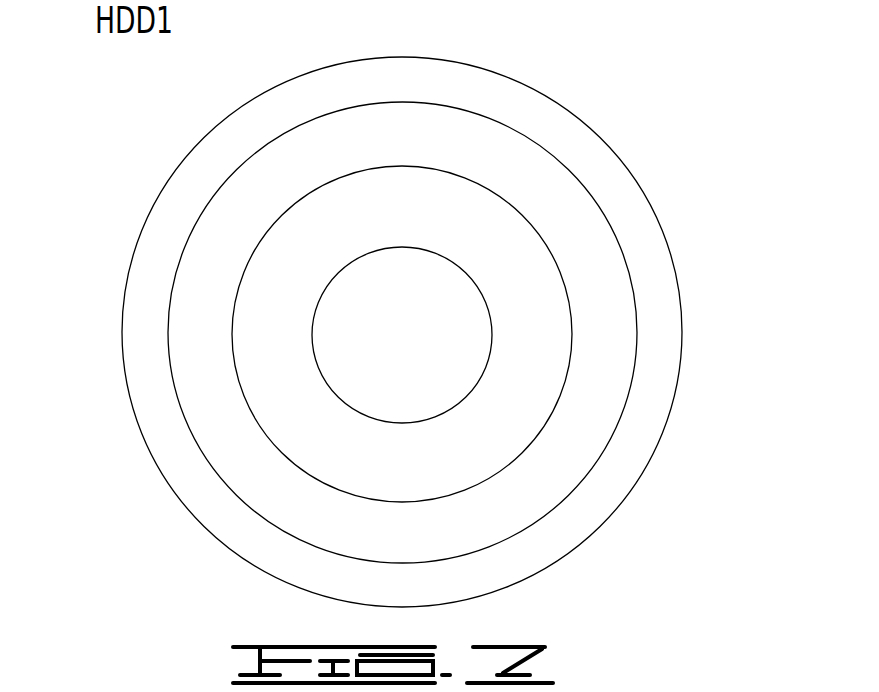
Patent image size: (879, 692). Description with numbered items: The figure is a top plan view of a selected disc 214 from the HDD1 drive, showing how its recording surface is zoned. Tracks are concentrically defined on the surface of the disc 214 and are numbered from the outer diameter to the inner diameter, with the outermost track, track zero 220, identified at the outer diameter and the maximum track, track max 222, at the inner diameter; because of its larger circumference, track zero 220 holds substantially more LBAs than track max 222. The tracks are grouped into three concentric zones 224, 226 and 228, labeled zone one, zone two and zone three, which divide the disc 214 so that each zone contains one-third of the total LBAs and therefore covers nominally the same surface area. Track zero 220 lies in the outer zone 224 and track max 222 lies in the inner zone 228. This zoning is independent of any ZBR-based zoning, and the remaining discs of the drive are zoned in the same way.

The disc 214 is at (180, 111).
The track 0 220 is at (369, 606).
The track max 222 is at (333, 393).
The zone 1 224 is at (483, 88).
The zone 2 226 is at (476, 142).
The zone 3 228 is at (476, 219).